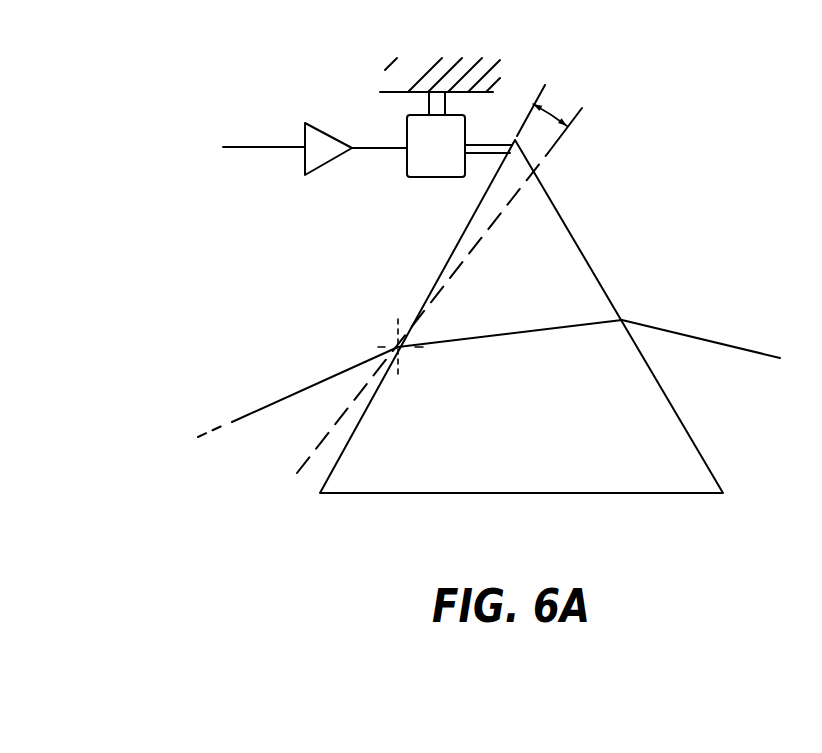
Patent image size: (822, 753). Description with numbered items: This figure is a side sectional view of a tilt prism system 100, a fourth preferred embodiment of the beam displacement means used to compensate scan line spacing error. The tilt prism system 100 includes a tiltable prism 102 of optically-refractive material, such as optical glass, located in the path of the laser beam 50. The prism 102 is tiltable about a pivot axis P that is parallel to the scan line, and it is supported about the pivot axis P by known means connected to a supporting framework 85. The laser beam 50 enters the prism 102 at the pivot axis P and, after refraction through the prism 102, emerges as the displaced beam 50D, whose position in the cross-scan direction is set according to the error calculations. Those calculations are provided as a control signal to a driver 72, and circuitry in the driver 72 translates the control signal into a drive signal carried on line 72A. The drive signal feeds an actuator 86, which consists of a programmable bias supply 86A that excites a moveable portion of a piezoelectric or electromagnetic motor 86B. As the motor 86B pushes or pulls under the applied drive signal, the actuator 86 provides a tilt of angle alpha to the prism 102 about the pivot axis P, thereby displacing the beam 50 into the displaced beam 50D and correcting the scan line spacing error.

The driver 72 is at (148, 149).
The line 72A is at (250, 147).
The actuator 86 is at (252, 190).
The programmable bias supply 86A is at (318, 130).
The supporting framework 85 is at (385, 93).
The motor 86B is at (422, 177).
The tilt prism system 100 is at (642, 143).
The tiltable prism 102 is at (700, 450).
The laser beam 50 is at (265, 407).
The displaced beam 50D is at (712, 342).
The pivot axis P is at (386, 331).